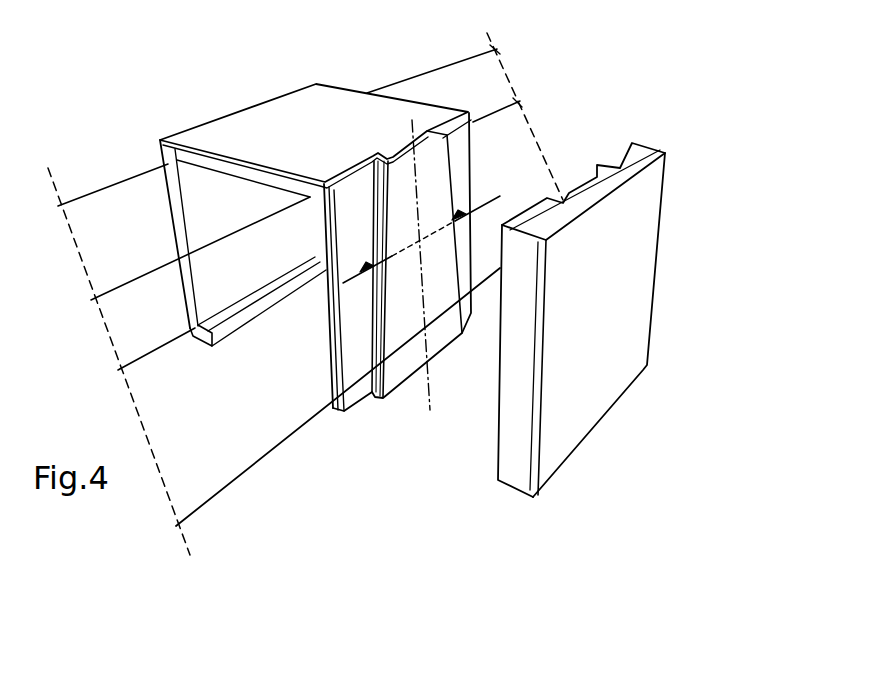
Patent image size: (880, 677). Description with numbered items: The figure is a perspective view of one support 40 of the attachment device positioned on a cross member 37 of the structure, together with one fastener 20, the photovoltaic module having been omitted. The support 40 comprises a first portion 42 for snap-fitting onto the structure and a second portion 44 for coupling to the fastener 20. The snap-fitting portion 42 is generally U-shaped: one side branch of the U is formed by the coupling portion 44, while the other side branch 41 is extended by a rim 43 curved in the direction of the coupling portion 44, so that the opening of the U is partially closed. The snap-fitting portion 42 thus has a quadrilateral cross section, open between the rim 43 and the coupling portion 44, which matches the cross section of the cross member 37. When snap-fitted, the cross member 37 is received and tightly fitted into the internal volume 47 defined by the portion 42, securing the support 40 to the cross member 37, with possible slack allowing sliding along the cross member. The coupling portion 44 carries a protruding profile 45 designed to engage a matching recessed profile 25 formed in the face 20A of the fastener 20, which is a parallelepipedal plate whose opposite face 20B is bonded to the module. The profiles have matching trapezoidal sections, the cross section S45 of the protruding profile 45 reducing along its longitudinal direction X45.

The fastener 20 is at (580, 297).
The face of the fastener 20A is at (498, 453).
The face of the fastener 20B is at (586, 387).
The recessed profile 25 is at (574, 192).
The cross member 37 is at (214, 478).
The support 40 is at (285, 227).
The side branch 41 is at (170, 198).
The snap-fitting portion 42 is at (477, 98).
The rim 43 is at (203, 338).
The coupling portion 44 is at (330, 357).
The protruding profile 45 is at (436, 320).
The internal volume 47 is at (267, 268).
The longitudinal direction of the protruding profile X45 is at (397, 263).
The cross section of the protruding profile S45 is at (418, 239).